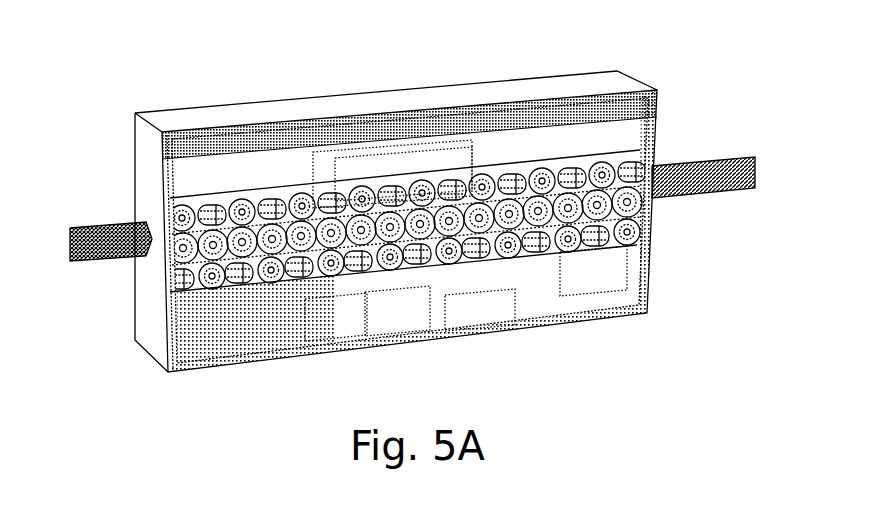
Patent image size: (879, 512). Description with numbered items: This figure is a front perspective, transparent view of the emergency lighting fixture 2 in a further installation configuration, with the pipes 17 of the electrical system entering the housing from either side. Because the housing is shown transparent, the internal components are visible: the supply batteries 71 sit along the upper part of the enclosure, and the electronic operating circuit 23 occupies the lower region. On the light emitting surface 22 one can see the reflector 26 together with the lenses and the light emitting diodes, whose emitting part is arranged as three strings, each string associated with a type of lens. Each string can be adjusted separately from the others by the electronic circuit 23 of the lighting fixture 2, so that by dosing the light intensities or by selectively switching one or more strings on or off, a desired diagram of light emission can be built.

The emergency lighting fixture 2 is at (662, 94).
The supply batteries 71 is at (435, 133).
The reflector 26 is at (615, 155).
The electronic operating circuit 23 is at (280, 330).
The light emitting surface 22 is at (578, 273).
The pipes 17 is at (106, 248).